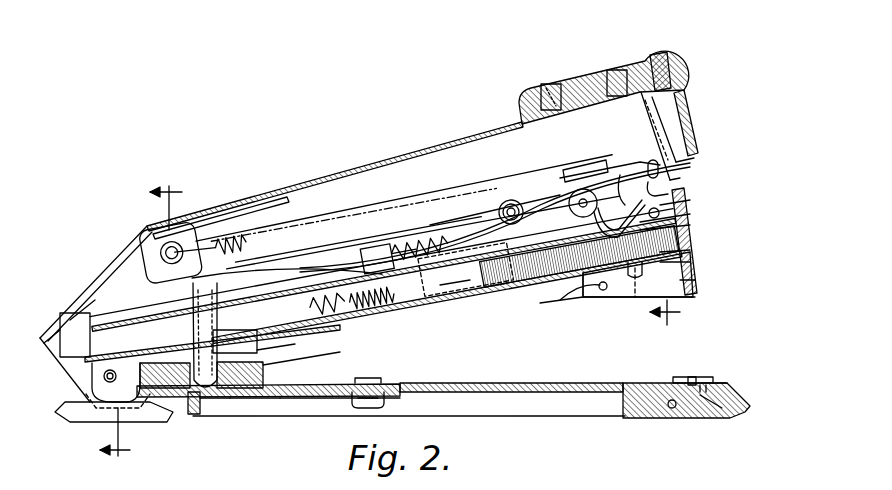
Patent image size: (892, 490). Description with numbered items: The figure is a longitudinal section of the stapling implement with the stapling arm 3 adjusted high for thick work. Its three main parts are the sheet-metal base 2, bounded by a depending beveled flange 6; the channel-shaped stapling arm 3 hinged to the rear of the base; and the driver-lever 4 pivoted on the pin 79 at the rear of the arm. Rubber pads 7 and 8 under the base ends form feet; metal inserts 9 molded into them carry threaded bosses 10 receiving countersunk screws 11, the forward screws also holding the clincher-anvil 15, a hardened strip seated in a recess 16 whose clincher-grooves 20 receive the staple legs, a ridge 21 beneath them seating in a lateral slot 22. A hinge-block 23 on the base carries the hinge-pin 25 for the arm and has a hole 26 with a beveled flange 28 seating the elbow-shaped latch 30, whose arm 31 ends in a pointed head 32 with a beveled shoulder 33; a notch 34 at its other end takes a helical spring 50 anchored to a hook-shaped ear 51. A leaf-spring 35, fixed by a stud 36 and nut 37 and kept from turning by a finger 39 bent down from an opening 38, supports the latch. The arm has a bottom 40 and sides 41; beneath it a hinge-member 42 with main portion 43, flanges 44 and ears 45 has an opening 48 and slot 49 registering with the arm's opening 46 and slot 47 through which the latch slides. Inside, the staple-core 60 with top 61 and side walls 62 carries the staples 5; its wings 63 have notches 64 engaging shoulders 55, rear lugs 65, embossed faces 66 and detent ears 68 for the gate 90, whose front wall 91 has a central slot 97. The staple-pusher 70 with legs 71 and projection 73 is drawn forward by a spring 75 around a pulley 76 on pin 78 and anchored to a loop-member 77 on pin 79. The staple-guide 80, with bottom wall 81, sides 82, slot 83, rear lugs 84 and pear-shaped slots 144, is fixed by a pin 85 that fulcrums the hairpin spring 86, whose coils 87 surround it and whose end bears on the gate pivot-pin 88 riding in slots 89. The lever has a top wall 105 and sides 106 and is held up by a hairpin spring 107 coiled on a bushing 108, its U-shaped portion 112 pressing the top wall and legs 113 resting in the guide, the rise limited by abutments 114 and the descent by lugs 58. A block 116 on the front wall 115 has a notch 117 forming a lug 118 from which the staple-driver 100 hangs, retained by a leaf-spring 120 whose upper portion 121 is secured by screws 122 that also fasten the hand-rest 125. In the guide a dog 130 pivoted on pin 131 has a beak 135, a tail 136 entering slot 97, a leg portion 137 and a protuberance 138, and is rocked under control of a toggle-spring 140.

The base 2 is at (538, 383).
The stapling arm 3 is at (483, 302).
The driver-lever 4 is at (405, 155).
The staples / section line 5 is at (521, 262).
The beveled flange 6 is at (760, 400).
The resilient pad 7 is at (647, 412).
The resilient pad 8 is at (166, 416).
The metal plate 9 is at (672, 408).
The threaded boss 10 is at (705, 414).
The screw 11 is at (84, 412).
The clincher-anvil 15 is at (712, 384).
The recess 16 is at (676, 384).
The clincher-groove 20 is at (691, 378).
The projecting ridge 21 is at (704, 380).
The lateral slot 22 is at (730, 388).
The hinge-block 23 is at (265, 368).
The hinge-pin 25 is at (102, 377).
The circular opening 26 is at (212, 350).
The beveled flange 28 is at (205, 359).
The latch 30 is at (192, 338).
The latch arm 31 is at (196, 336).
The pointed head 32 is at (215, 407).
The beveled shoulder 33 is at (301, 351).
The notch 34 is at (295, 278).
The leaf-spring 35 is at (295, 400).
The stud 36 is at (372, 385).
The nut 37 is at (386, 403).
The opening 38 is at (255, 407).
The finger 39 is at (196, 416).
The bottom 40 is at (405, 305).
The sides 41 is at (125, 282).
The hinge-member 42 is at (290, 346).
The main portion 43 is at (300, 318).
The flanges 44 is at (283, 331).
The ears 45 is at (92, 398).
The rectangular opening 46 is at (153, 331).
The slot 47 is at (250, 322).
The opening 48 is at (132, 332).
The slot 49 is at (275, 318).
The helical spring 50 is at (350, 283).
The hook-shaped ear 51 is at (447, 262).
The lateral shoulders 55 is at (561, 314).
The lugs 58 is at (575, 172).
The staple-core 60 is at (478, 246).
The top 61 is at (197, 310).
The side walls 62 is at (100, 328).
The wings 63 is at (625, 300).
The notches 64 is at (578, 285).
The lugs 65 is at (116, 376).
The projecting faces 66 is at (699, 291).
The detent ears 68 is at (696, 263).
The staple-pusher 70 is at (462, 226).
The legs 71 is at (455, 298).
The projection 73 is at (368, 260).
The helical spring 75 is at (410, 250).
The pulley 76 is at (598, 215).
The loop-like member 77 is at (215, 250).
The transverse pin 78 is at (570, 210).
The pin 79 is at (158, 260).
The staple-guide 80 is at (446, 205).
The bottom wall 81 is at (253, 270).
The sides 82 is at (303, 228).
The slot 83 is at (136, 312).
The lugs 84 is at (97, 305).
The transverse pin 85 is at (515, 202).
The hairpin-shaped wire spring 86 is at (540, 200).
The helical coils 87 is at (505, 210).
The pin 88 is at (668, 188).
The slots 89 is at (653, 162).
The gate 90 is at (700, 280).
The front wall 91 is at (692, 255).
The slot 97 is at (697, 212).
The staple-driver 100 is at (697, 140).
The top wall 105 is at (470, 145).
The sides 106 is at (360, 178).
The hairpin-shaped spring 107 is at (210, 222).
The bushing 108 is at (178, 245).
The U-shaped portion 112 is at (287, 195).
The legs 113 is at (272, 272).
The abutments 114 is at (70, 320).
The front wall 115 is at (682, 96).
The block 116 is at (660, 54).
The notch 117 is at (688, 112).
The lug 118 is at (692, 126).
The leaf-spring 120 is at (648, 104).
The upper portion 121 is at (590, 112).
The screws 122 is at (551, 86).
The hand-rest 125 is at (688, 60).
The dog 130 is at (638, 274).
The transverse pin 131 is at (660, 212).
The beak 135 is at (590, 303).
The tail 136 is at (692, 205).
The leg portion 137 is at (695, 226).
The rounded protuberance 138 is at (705, 231).
The toggle-spring 140 is at (600, 165).
The pear-shaped slots 144 is at (628, 165).